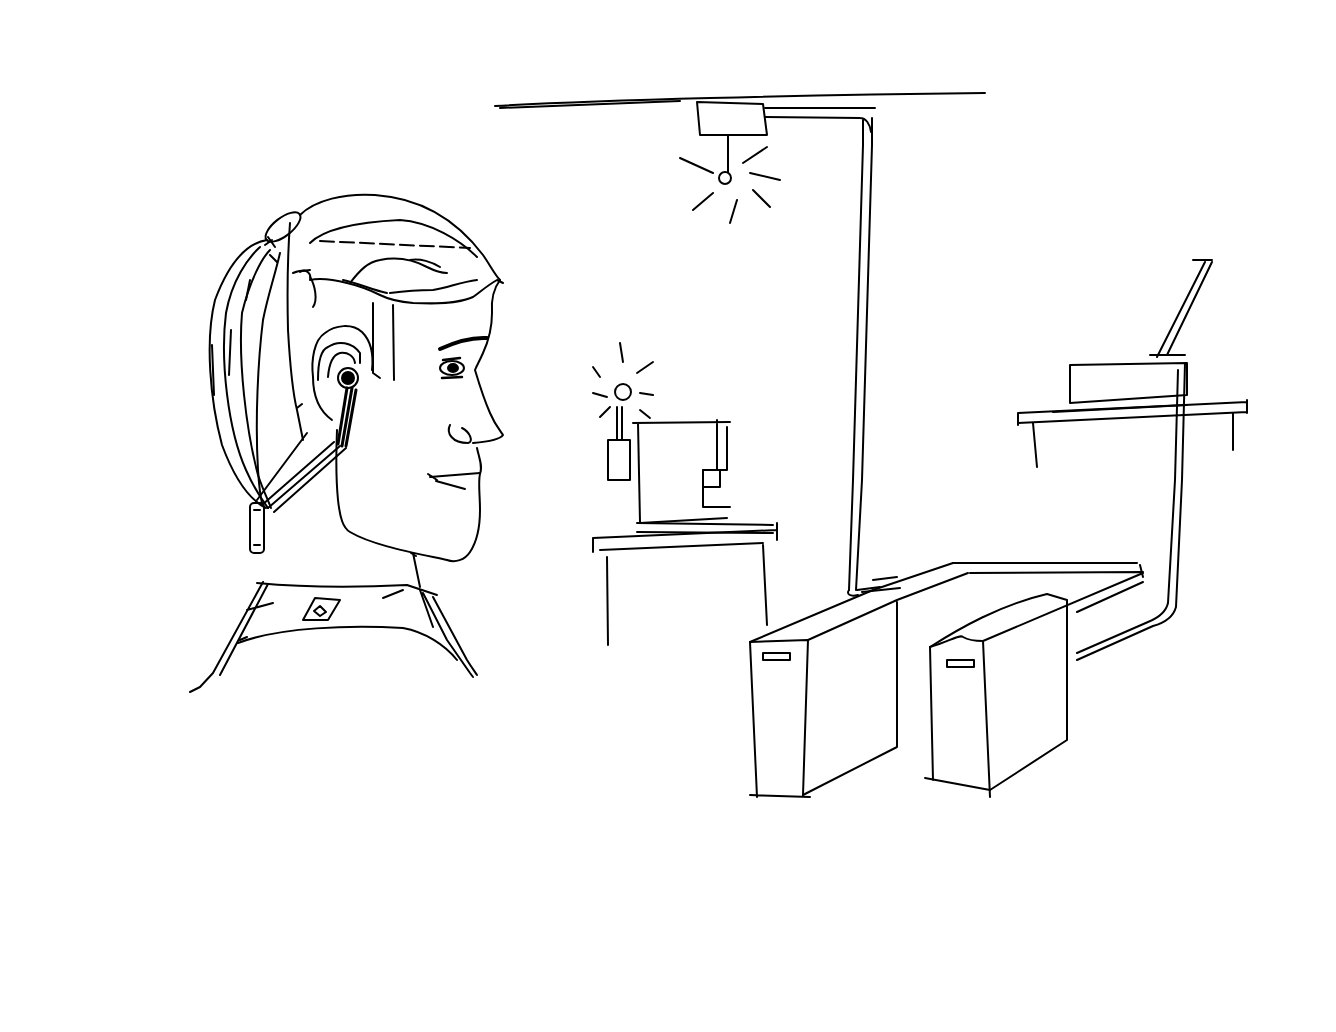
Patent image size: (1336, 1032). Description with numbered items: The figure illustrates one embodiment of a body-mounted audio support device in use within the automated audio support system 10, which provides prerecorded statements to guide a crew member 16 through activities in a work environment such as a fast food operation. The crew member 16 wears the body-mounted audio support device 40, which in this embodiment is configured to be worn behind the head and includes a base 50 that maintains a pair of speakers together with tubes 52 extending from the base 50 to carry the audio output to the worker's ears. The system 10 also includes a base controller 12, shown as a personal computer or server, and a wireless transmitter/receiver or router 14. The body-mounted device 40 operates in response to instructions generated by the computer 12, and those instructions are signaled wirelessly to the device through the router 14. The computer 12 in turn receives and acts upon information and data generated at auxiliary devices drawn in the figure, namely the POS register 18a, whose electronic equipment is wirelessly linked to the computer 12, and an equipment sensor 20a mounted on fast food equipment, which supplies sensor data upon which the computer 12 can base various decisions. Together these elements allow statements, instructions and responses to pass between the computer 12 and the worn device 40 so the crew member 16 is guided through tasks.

The automated audio support system 10 is at (1110, 50).
The base controller 12 is at (937, 795).
The wireless transmitter/receiver 14 is at (732, 116).
The crew member 16 is at (368, 190).
The POS station 18a is at (1205, 362).
The equipment sensor 20a is at (648, 428).
The body-mounted audio support device 40 is at (247, 533).
The base 50 is at (256, 548).
The tubes 52 is at (338, 478).